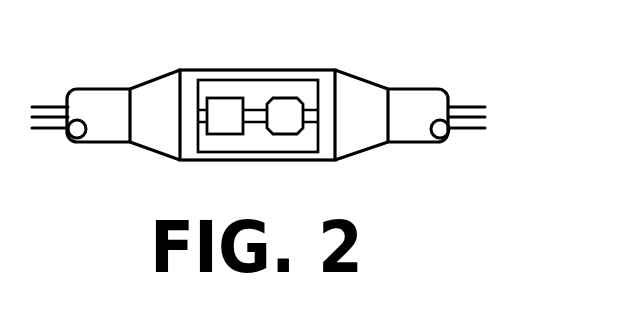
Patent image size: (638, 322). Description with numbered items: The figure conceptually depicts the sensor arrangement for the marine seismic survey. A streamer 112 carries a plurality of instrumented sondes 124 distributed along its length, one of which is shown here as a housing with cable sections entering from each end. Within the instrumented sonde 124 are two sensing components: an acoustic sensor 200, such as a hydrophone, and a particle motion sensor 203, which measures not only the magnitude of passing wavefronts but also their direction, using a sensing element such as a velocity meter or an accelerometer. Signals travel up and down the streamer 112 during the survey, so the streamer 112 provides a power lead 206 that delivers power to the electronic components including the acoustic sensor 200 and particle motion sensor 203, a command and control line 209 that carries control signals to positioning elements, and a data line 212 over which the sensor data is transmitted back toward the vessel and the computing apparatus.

The streamer 112 is at (112, 86).
The instrumented sonde 124 is at (176, 70).
The particle motion sensor 203 is at (223, 108).
The acoustic sensor 200 is at (285, 108).
The power lead 206 is at (485, 105).
The command and control line 209 is at (485, 117).
The data line 212 is at (485, 128).